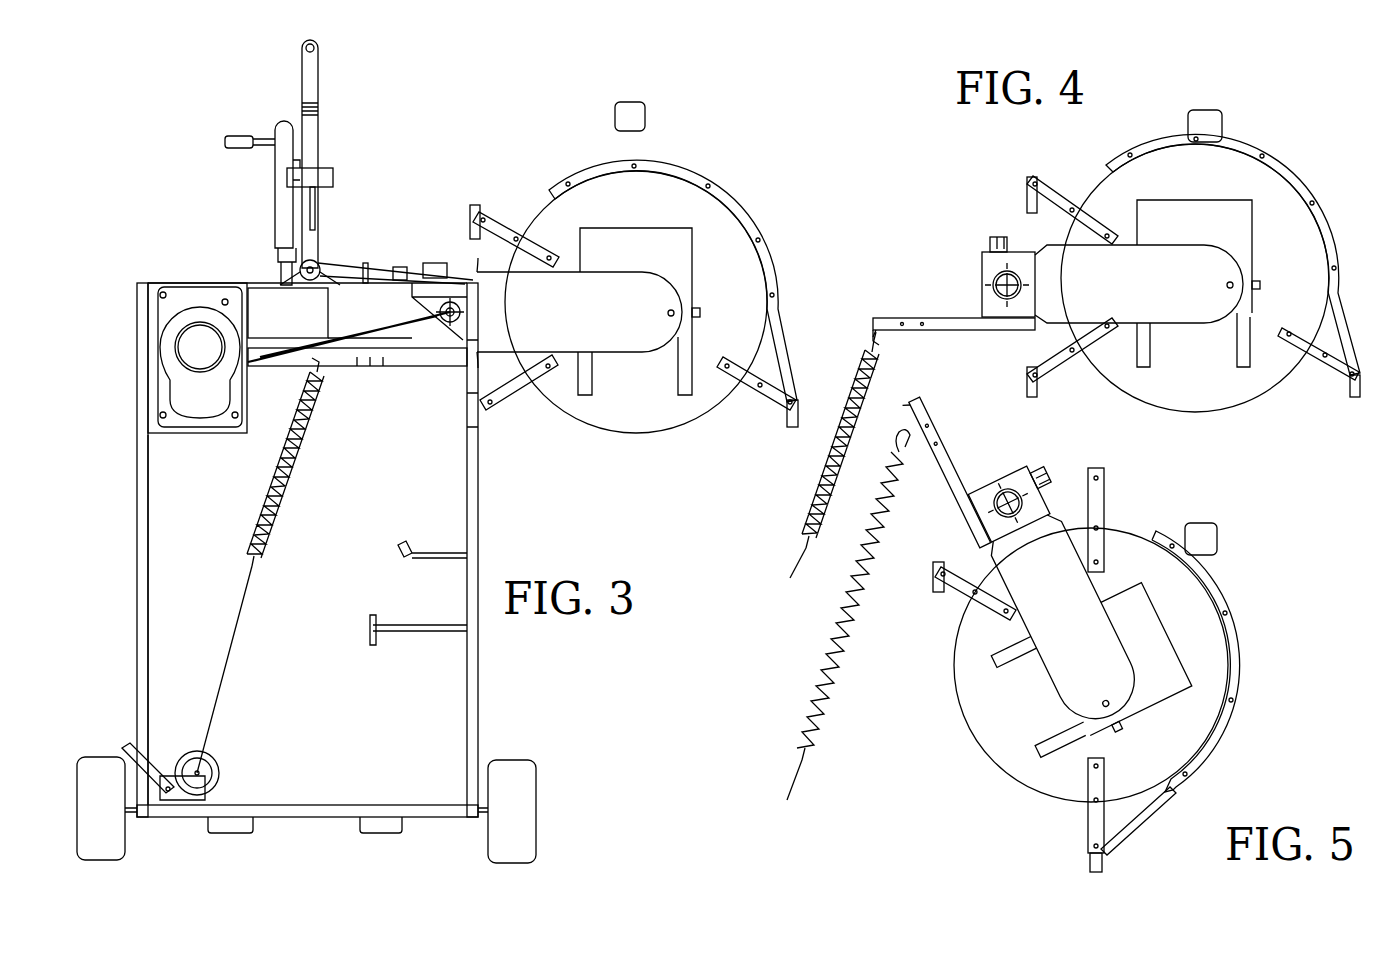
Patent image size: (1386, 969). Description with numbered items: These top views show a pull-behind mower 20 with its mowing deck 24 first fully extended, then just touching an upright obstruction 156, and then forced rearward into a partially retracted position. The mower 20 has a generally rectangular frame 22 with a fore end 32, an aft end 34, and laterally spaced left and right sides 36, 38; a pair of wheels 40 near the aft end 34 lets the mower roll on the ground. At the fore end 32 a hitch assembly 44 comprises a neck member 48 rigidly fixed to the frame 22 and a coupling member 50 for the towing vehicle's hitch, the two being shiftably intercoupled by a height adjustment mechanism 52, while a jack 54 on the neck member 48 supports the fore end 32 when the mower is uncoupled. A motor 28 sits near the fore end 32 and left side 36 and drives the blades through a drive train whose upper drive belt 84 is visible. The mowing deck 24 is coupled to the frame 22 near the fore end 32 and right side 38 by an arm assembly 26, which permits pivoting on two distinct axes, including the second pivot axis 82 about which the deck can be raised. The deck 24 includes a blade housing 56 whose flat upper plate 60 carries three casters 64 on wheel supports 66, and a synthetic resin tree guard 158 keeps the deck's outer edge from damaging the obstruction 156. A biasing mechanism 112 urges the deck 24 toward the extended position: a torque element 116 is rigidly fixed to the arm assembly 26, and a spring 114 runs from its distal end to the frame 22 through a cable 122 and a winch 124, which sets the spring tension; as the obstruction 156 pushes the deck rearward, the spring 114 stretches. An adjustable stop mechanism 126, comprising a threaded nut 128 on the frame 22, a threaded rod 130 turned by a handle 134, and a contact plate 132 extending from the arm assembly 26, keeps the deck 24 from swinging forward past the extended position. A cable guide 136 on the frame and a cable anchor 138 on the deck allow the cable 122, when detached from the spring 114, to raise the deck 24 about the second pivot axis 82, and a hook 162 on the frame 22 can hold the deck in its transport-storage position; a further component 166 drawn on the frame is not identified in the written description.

In FIG. 3, the pull-behind mower 20 is at (459, 112).
In FIG. 3, the frame 22 is at (490, 505).
In FIG. 3, the mowing deck 24 is at (637, 290).
In FIG. 4, the mowing deck 24 is at (1092, 237).
In FIG. 5, the mowing deck 24 is at (1103, 634).
In FIG. 4, the arm assembly 26 is at (975, 245).
In FIG. 5, the arm assembly 26 is at (987, 465).
In FIG. 3, the motor 28 is at (190, 347).
In FIG. 3, the fore end 32 is at (240, 288).
In FIG. 3, the aft end 34 is at (290, 833).
In FIG. 3, the left side 36 is at (137, 562).
In FIG. 3, the right side 38 is at (478, 565).
In FIG. 3, the wheels 40 is at (100, 757).
In FIG. 3, the hitch assembly 44 is at (330, 186).
In FIG. 3, the neck member 48 is at (320, 215).
In FIG. 3, the coupling member 50 is at (318, 80).
In FIG. 3, the height adjustment mechanism 52 is at (318, 112).
In FIG. 3, the jack 54 is at (276, 123).
In FIG. 3, the blade housing 56 is at (660, 470).
In FIG. 3, the upper plate 60 is at (683, 435).
In FIG. 3, the casters 64 is at (450, 262).
In FIG. 4, the casters 64 is at (872, 333).
In FIG. 3, the wheel supports 66 is at (485, 205).
In FIG. 3, the second pivot axis 82 is at (440, 320).
In FIG. 4, the second pivot axis 82 is at (993, 285).
In FIG. 5, the second pivot axis 82 is at (993, 505).
In FIG. 3, the upper drive belt 84 is at (338, 262).
In FIG. 3, the biasing mechanism 112 is at (313, 462).
In FIG. 4, the biasing mechanism 112 is at (869, 417).
In FIG. 5, the biasing mechanism 112 is at (881, 595).
In FIG. 3, the spring 114 is at (310, 460).
In FIG. 4, the spring 114 is at (862, 378).
In FIG. 5, the spring 114 is at (848, 640).
In FIG. 3, the torque element 116 is at (372, 366).
In FIG. 4, the torque element 116 is at (950, 332).
In FIG. 5, the torque element 116 is at (947, 474).
In FIG. 3, the cable 122 is at (225, 660).
In FIG. 4, the cable 122 is at (797, 566).
In FIG. 5, the cable 122 is at (793, 786).
In FIG. 3, the winch 124 is at (215, 762).
In FIG. 3, the adjustable stop mechanism 126 is at (400, 258).
In FIG. 3, the threaded nut 128 is at (395, 262).
In FIG. 3, the threaded rod 130 is at (410, 265).
In FIG. 3, the contact plate 132 is at (418, 262).
In FIG. 3, the handle 134 is at (370, 285).
In FIG. 3, the cable guide 136 is at (470, 312).
In FIG. 3, the cable anchor 138 is at (700, 308).
In FIG. 3, the upright obstruction 156 is at (660, 102).
In FIG. 4, the upright obstruction 156 is at (1215, 110).
In FIG. 5, the upright obstruction 156 is at (1212, 523).
In FIG. 3, the tree guard 158 is at (675, 172).
In FIG. 3, the hook 162 is at (368, 615).
In FIG. 3, the bracket 166 is at (408, 543).